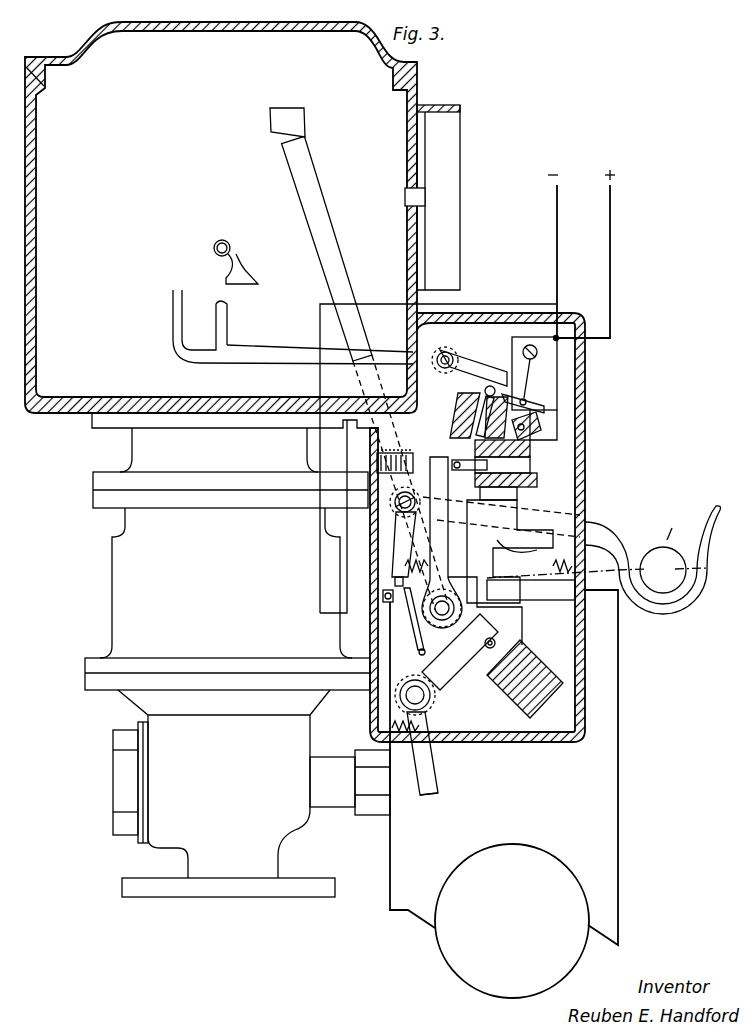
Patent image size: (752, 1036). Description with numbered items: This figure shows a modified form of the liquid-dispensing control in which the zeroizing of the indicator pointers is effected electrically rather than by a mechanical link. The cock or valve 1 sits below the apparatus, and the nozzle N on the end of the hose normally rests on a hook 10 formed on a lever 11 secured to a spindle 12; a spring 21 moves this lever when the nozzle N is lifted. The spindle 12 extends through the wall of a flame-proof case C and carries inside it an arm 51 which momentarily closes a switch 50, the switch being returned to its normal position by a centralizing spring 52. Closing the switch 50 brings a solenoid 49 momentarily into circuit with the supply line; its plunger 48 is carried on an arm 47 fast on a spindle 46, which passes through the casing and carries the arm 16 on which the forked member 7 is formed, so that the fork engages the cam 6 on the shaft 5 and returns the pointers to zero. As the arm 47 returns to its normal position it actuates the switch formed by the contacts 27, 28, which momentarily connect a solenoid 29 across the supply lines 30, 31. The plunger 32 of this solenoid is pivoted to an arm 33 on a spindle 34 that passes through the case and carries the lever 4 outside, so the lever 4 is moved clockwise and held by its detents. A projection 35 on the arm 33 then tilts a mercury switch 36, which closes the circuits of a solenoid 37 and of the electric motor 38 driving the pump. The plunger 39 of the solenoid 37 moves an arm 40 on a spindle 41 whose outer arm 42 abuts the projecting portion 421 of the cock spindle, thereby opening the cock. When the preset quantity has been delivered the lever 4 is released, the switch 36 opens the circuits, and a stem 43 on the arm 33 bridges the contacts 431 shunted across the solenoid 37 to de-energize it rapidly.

The cock or valve 1 is at (237, 655).
The lever 4 is at (338, 268).
The shaft 5 is at (231, 246).
The cam 6 is at (242, 270).
The forked member 7 is at (183, 307).
The hook 10 is at (653, 560).
The lever 11 is at (578, 505).
The spindle 12 is at (403, 502).
The arm 16 is at (289, 349).
The spring 21 is at (556, 590).
The electrical contact 27 is at (545, 408).
The contact 28 is at (542, 418).
The solenoid 29 is at (528, 482).
The supply line 30 is at (585, 255).
The supply line 31 is at (563, 256).
The plunger 32 is at (528, 463).
The arm 33 is at (438, 470).
The spindle 34 is at (447, 622).
The projection 35 is at (470, 528).
The mercury switch 36 is at (512, 552).
The solenoid 37 is at (543, 665).
The electric motor 38 is at (504, 794).
The plunger 39 is at (505, 636).
The arm 40 is at (465, 663).
The spindle 41 is at (430, 700).
The arm 42 is at (438, 783).
The projecting portion of the cock spindle 421 is at (415, 783).
The stem 43 is at (424, 460).
The contacts 431 is at (358, 510).
The spindle 46 is at (455, 347).
The arm 47 is at (472, 365).
The plunger 48 is at (465, 400).
The solenoid 49 is at (478, 399).
The switch 50 is at (388, 605).
The arm 51 is at (393, 551).
The centralizing spring 52 is at (408, 623).
The flame-proof case C is at (585, 684).
The nozzle N is at (662, 524).